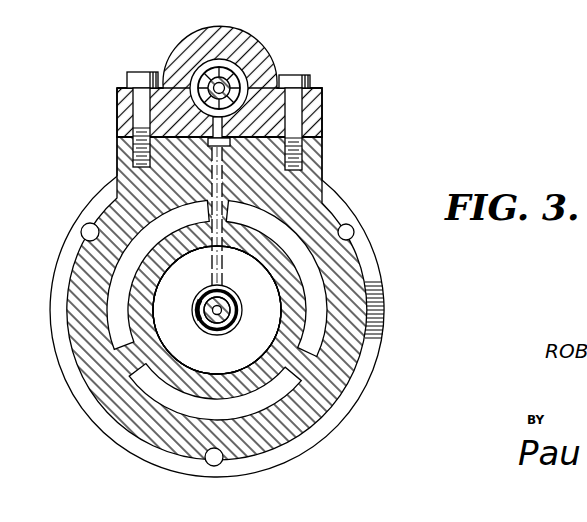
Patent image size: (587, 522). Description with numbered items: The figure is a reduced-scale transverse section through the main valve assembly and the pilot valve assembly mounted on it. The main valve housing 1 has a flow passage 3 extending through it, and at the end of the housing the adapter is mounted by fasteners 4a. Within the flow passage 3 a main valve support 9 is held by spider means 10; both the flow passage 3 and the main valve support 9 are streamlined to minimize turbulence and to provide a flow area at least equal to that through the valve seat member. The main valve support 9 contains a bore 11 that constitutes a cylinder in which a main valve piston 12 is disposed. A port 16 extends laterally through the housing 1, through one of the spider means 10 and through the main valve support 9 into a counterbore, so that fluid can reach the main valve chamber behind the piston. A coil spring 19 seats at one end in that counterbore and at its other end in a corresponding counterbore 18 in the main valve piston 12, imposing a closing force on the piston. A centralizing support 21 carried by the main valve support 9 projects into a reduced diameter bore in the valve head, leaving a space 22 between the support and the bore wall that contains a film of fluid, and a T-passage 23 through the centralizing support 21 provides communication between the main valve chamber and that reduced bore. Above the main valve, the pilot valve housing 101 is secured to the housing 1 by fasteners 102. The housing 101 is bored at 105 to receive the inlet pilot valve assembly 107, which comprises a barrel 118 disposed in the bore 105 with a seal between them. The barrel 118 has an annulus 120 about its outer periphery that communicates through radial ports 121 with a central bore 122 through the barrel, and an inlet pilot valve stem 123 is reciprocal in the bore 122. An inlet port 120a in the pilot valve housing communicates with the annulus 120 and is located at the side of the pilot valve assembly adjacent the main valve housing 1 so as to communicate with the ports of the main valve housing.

The main valve housing 1 is at (350, 313).
The flow passage 3 is at (275, 402).
The fasteners 4a is at (82, 228).
The main valve support 9 is at (137, 293).
The spider means 10 is at (200, 203).
The bore 11 is at (245, 250).
The main valve piston 12 is at (217, 310).
The port 16 is at (224, 168).
The counterbore 18 is at (236, 312).
The coil spring 19 is at (203, 316).
The centralizing support 21 is at (216, 333).
The space 22 is at (205, 298).
The T-passage 23 is at (222, 299).
The pilot valve housing 101 is at (300, 113).
The fasteners 102 is at (143, 73).
The bore 105 is at (250, 78).
The inlet pilot valve assembly 107 is at (206, 64).
The barrel 118 is at (196, 76).
The annulus 120 is at (254, 86).
The inlet port 120a is at (212, 147).
The radial ports 121 is at (222, 62).
The central bore 122 is at (219, 126).
The inlet pilot valve stem 123 is at (224, 78).